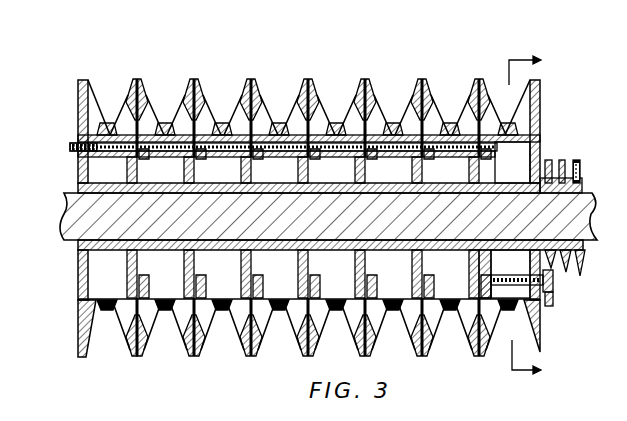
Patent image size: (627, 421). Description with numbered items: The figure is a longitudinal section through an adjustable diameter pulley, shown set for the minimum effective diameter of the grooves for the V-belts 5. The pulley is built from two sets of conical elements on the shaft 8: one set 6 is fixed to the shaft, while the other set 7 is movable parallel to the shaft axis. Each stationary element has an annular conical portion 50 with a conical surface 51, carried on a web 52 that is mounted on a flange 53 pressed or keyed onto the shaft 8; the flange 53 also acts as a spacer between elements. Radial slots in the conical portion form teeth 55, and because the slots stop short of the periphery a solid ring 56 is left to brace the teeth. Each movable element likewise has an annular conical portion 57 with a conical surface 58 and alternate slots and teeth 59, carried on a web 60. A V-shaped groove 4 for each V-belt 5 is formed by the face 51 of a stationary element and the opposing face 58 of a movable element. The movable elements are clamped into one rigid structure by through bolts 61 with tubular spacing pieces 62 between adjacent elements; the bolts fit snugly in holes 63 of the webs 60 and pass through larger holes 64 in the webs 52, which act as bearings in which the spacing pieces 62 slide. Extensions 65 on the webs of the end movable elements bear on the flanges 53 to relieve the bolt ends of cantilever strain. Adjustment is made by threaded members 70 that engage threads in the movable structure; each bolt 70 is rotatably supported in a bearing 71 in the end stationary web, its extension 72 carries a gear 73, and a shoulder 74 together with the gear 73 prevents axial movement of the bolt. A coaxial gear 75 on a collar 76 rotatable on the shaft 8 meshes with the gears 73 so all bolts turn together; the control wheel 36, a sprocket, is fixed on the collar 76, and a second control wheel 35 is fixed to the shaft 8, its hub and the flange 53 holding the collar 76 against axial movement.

The V-shaped groove 4 is at (334, 95).
The V-belt 5 is at (222, 122).
The stationary set of elements 6 is at (482, 80).
The movable set of elements 7 is at (404, 78).
The shaft 8 is at (328, 216).
The second control wheel 35 is at (581, 164).
The control wheel 36 is at (577, 162).
The annular conical portion 50 is at (133, 357).
The conical surface 51 is at (123, 327).
The web 52 is at (127, 171).
The flange 53 is at (79, 270).
The teeth 55 is at (121, 125).
The solid ring 56 is at (136, 78).
The annular conical portion 57 is at (139, 357).
The conical surface 58 is at (147, 327).
The teeth 59 is at (203, 313).
The web 60 is at (144, 157).
The through bolt 61 is at (72, 145).
The tubular spacing piece 62 is at (275, 152).
The hole 63 is at (318, 153).
The hole 64 is at (529, 142).
The web extension 65 is at (78, 172).
The threaded member 70 is at (505, 278).
The bearing 71 is at (540, 308).
The extension 72 is at (553, 287).
The gear 73 is at (556, 298).
The shoulder 74 is at (524, 304).
The coaxial gear 75 is at (548, 160).
The collar 76 is at (562, 160).